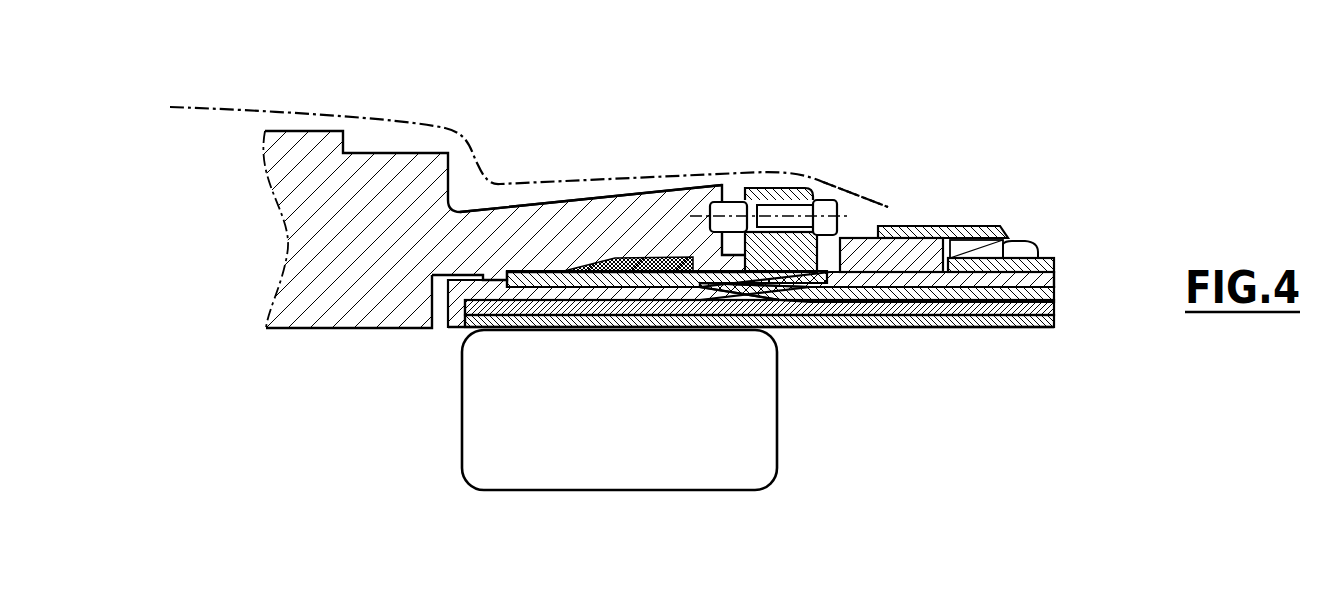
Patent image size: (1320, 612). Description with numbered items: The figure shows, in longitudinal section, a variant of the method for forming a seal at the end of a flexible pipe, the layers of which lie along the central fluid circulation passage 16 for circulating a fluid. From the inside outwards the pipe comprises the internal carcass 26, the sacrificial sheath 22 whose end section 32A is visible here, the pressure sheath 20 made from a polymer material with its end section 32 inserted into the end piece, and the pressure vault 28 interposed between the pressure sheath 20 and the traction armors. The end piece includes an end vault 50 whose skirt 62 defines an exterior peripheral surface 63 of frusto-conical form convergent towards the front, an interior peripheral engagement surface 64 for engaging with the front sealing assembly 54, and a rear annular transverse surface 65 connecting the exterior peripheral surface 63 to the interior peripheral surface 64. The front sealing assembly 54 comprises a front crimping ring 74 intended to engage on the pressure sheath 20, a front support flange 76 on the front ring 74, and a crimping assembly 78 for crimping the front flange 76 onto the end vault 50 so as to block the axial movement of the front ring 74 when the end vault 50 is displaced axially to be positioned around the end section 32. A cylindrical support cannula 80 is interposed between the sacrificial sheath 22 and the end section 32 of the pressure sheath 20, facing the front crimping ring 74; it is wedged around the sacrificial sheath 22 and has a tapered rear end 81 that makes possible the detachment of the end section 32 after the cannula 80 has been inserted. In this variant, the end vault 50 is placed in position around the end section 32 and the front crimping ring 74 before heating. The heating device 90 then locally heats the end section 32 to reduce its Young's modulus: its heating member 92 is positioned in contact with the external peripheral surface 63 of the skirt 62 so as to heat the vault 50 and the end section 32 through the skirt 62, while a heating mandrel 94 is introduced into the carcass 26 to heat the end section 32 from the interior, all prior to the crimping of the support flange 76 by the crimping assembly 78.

The heating device 90 is at (180, 70).
The heating member 92 is at (258, 107).
The end vault 50 is at (290, 222).
The skirt 62 is at (530, 228).
The exterior peripheral surface 63 is at (580, 194).
The interior peripheral engagement surface 64 is at (606, 255).
The front sealing assembly 54 is at (676, 240).
The rear annular transverse surface 65 is at (722, 190).
The front support flange 76 is at (787, 188).
The crimping assembly 78 is at (846, 202).
The end section of the pressure sheath 32 is at (562, 328).
The end section of the sacrificial sheath 32A is at (782, 330).
The cylindrical support cannula 80 is at (628, 328).
The front crimping ring 74 is at (666, 328).
The tapered rear end 81 is at (722, 328).
The pressure sheath 20 is at (1054, 293).
The sacrificial sheath 22 is at (937, 328).
The internal carcass 26 is at (1005, 328).
The pressure vault 28 is at (1054, 260).
The central fluid circulation passage 16 is at (751, 380).
The heating mandrel 94 is at (462, 405).